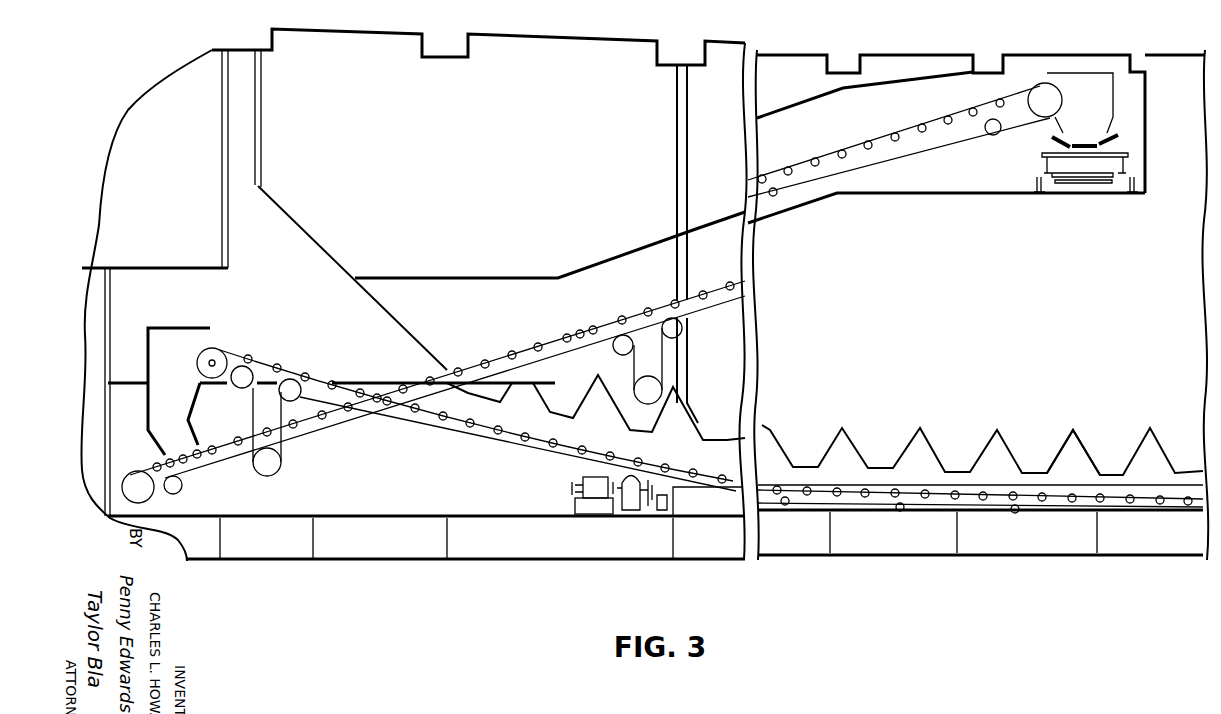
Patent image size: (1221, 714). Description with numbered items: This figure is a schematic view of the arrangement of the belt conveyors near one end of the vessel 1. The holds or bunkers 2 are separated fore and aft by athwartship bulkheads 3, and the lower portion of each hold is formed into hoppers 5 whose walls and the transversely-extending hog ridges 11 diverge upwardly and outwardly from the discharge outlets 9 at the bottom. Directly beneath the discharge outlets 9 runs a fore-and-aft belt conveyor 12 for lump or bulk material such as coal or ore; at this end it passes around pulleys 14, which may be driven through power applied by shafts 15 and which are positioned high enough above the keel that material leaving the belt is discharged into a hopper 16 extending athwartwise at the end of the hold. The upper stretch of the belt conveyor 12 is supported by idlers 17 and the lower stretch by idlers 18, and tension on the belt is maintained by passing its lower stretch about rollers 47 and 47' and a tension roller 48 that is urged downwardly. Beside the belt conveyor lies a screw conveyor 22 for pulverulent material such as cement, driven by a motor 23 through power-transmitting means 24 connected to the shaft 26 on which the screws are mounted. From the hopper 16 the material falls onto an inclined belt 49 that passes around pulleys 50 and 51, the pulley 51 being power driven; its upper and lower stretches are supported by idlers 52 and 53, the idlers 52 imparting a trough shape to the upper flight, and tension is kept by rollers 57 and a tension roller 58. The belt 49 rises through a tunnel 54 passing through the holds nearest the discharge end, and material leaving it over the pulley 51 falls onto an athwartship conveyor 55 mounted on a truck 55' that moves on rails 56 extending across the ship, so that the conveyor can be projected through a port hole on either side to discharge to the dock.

The vessel 1 is at (412, 589).
The holds or bunkers 2 is at (609, 58).
The athwartship bulkheads 3 is at (677, 134).
The hoppers 5 is at (945, 450).
The discharge outlet 9 is at (700, 438).
The transversely-extending hog ridges 11 is at (1073, 430).
The belt conveyor 12 is at (503, 446).
The pulleys 14 is at (228, 357).
The shafts 15 is at (213, 360).
The hopper 16 is at (150, 345).
The idlers 17 is at (443, 420).
The idlers 18 is at (390, 412).
The screw conveyor 22 is at (692, 505).
The motor 23 is at (592, 505).
The power-transmitting means 24 is at (628, 503).
The shaft 26 is at (660, 505).
The roller 47 is at (232, 392).
The roller 47' is at (302, 368).
The tension roller 48 is at (276, 456).
The belt 49 is at (500, 352).
The pulley 50 is at (150, 492).
The pulley 51 is at (1040, 92).
The idlers 52 is at (702, 290).
The idlers 53 is at (560, 350).
The tunnel 54 is at (595, 262).
The athwartship conveyor 55 is at (1114, 110).
The truck 55' is at (1115, 168).
The rails 56 is at (1036, 193).
The rollers 57 is at (663, 328).
The tension roller 58 is at (660, 392).